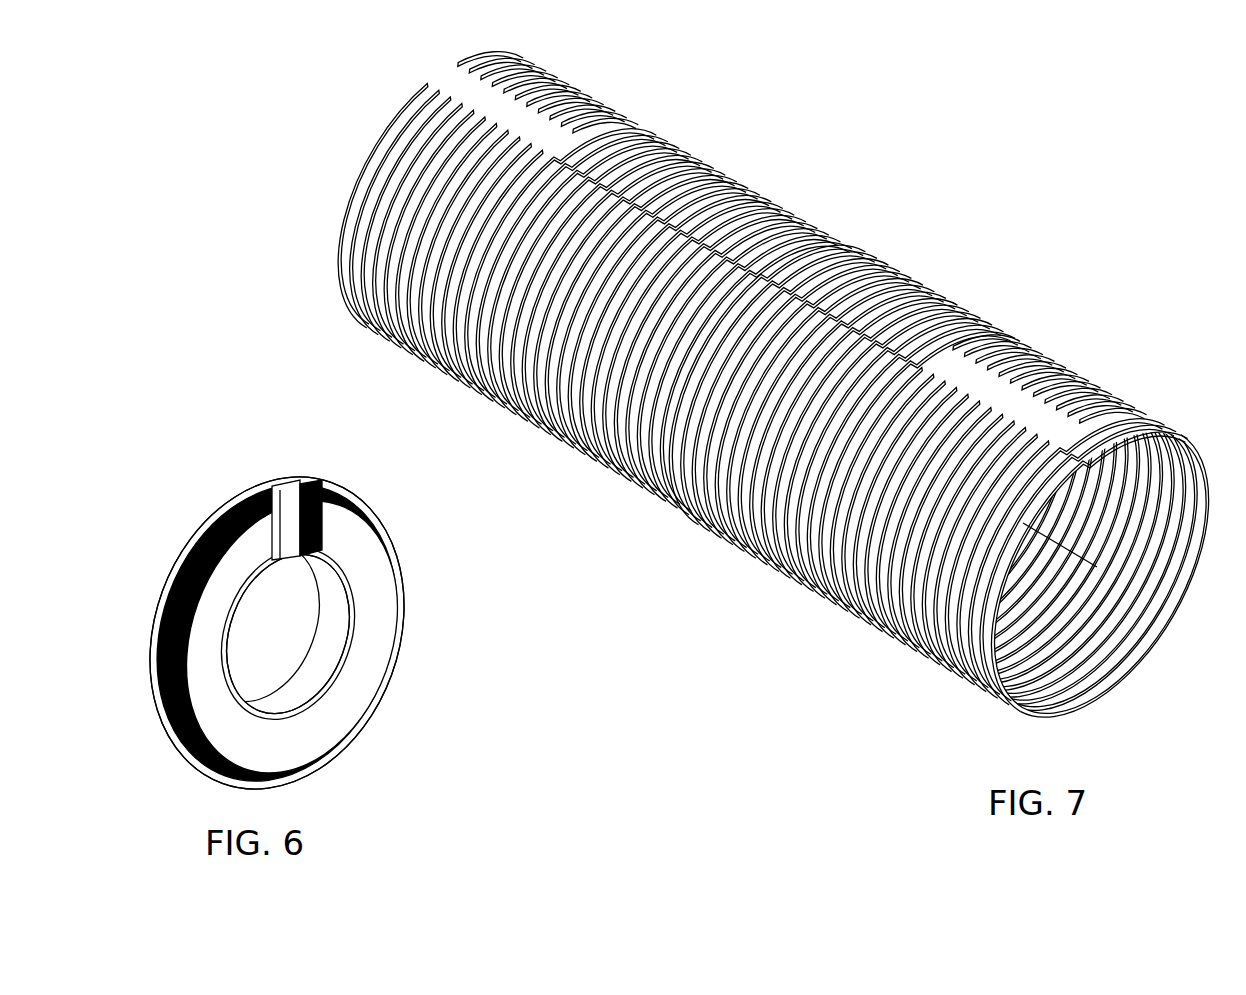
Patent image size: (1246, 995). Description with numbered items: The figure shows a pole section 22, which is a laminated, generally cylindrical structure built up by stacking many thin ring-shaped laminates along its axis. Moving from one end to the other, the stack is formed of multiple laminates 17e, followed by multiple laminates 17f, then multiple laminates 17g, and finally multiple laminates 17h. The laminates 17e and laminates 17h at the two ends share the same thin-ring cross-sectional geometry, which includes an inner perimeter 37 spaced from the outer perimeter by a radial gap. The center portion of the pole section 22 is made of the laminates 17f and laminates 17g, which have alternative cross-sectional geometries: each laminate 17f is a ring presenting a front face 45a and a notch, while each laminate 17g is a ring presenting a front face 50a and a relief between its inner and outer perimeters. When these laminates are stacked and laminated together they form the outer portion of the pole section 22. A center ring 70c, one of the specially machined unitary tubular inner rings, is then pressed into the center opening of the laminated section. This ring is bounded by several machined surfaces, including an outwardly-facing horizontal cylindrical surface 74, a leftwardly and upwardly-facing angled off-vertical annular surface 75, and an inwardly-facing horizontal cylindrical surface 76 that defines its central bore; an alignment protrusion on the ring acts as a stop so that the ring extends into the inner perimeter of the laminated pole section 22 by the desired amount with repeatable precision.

In FIG. 7, the laminates 17e is at (566, 70).
In FIG. 7, the laminates 17f is at (738, 170).
In FIG. 7, the laminates 17g is at (901, 265).
In FIG. 7, the laminates 17h is at (1108, 385).
In FIG. 6, the pole section 22 is at (322, 563).
In FIG. 6, the inner perimeter 37 is at (275, 762).
In FIG. 6, the outwardly-facing horizontal cylindrical surface 74 is at (277, 522).
In FIG. 6, the leftwardly and upwardly-facing angled off-vertical annular surface 75 is at (388, 541).
In FIG. 6, the front face 50a is at (367, 555).
In FIG. 6, the front face 45a is at (348, 584).
In FIG. 6, the center ring 70c is at (342, 679).
In FIG. 6, the inwardly-facing horizontal cylindrical surface 76 is at (331, 623).